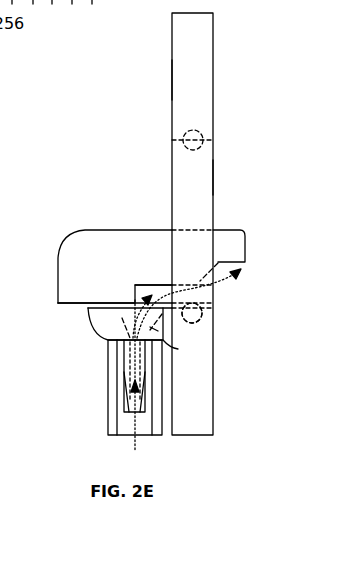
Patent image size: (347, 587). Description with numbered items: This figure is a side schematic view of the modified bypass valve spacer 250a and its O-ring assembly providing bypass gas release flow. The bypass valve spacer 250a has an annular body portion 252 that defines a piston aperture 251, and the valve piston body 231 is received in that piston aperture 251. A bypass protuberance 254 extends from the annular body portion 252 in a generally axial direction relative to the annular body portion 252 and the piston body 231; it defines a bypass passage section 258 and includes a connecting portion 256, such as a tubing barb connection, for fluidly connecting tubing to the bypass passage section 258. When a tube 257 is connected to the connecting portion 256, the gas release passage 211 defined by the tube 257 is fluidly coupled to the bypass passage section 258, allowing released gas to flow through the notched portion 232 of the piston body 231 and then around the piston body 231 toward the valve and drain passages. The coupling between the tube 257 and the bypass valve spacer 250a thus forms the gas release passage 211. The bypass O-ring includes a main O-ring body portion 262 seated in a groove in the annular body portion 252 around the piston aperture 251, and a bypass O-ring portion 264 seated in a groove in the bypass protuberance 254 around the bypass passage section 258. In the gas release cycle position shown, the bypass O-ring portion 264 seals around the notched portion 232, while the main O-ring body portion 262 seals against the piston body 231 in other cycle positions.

The bypass valve spacer 250a is at (228, 52).
The piston aperture 251 is at (203, 177).
The annular body portion 252 is at (205, 80).
The valve piston body 231 is at (113, 229).
The notched portion 232 is at (151, 284).
The bypass O-ring portion 264 is at (102, 303).
The bypass protuberance 254 is at (97, 328).
The bypass passage section 258 is at (181, 351).
The tube 257 is at (110, 409).
The gas release passage 211 is at (126, 429).
The connecting portion 256 is at (152, 395).
The main O-ring body portion 262 is at (210, 325).